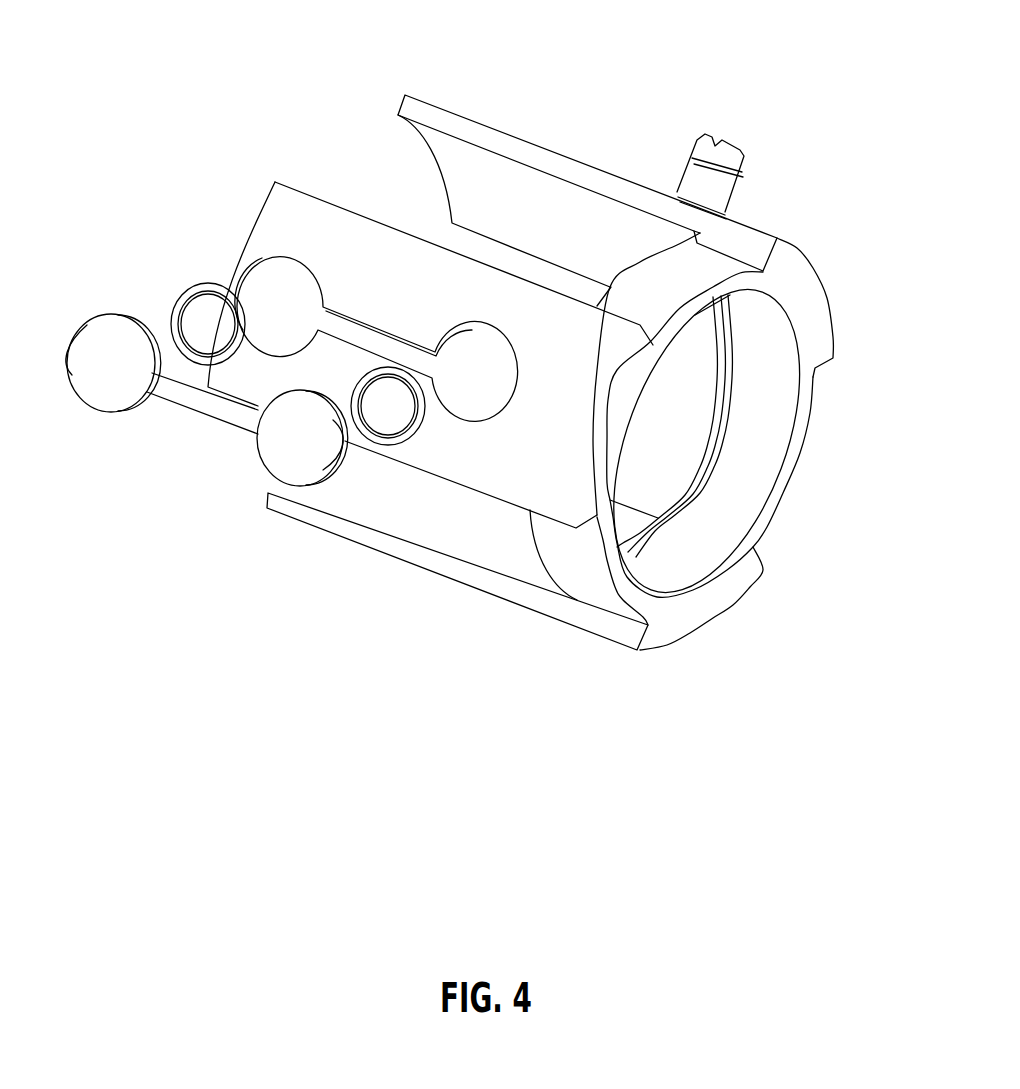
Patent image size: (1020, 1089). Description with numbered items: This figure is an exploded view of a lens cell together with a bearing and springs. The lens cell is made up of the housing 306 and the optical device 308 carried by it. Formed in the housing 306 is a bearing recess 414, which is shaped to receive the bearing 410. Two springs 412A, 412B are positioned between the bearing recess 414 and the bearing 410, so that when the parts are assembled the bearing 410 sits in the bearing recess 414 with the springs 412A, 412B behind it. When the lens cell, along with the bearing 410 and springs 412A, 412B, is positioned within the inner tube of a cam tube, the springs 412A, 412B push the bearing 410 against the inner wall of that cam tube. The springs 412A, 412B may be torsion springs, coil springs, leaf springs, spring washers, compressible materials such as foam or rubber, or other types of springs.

The housing 306 is at (517, 131).
The optical device 308 is at (697, 589).
The bearing 410 is at (120, 416).
The spring 412A is at (183, 292).
The spring 412B is at (397, 445).
The bearing recess 414 is at (258, 260).